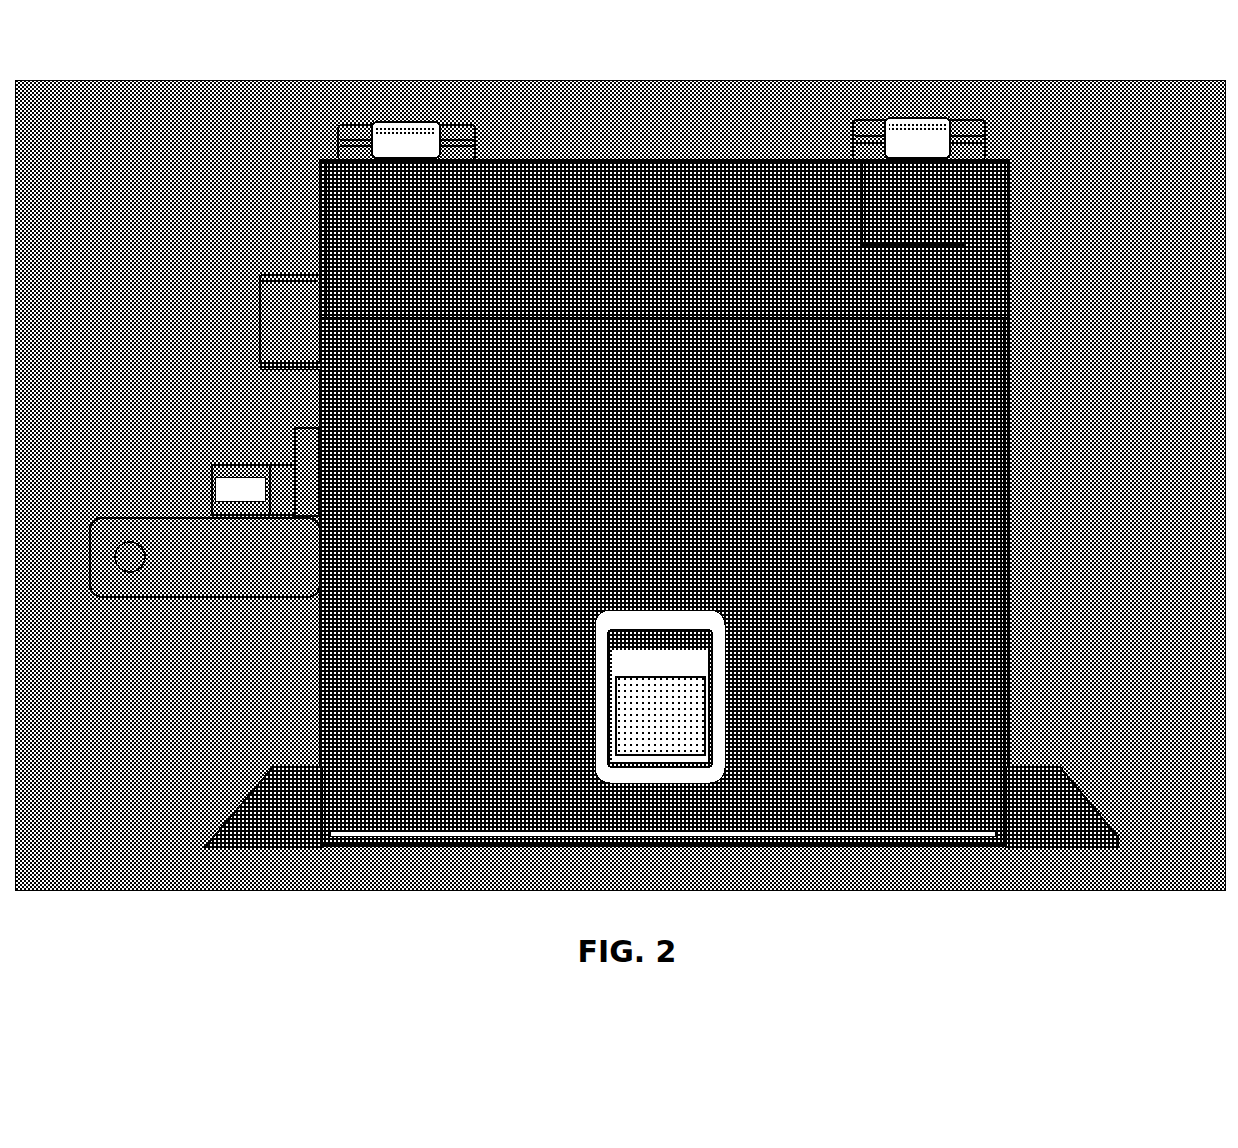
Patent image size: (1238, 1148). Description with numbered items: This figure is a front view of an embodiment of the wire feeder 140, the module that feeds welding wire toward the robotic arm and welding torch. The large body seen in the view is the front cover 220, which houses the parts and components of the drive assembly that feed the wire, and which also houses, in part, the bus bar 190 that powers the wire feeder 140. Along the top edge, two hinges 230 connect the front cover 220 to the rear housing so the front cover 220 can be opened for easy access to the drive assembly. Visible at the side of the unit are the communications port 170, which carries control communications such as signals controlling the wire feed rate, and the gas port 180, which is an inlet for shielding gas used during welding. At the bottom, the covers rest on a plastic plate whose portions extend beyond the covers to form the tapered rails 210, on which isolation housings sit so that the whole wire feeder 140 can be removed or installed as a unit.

The wire feeder 140 is at (1012, 320).
The communications port 170 is at (262, 276).
The gas port 180 is at (212, 470).
The bus bar 190 is at (110, 598).
The tapered rails 210 is at (240, 790).
The front cover 220 is at (1098, 455).
The hinges 230 is at (430, 122).